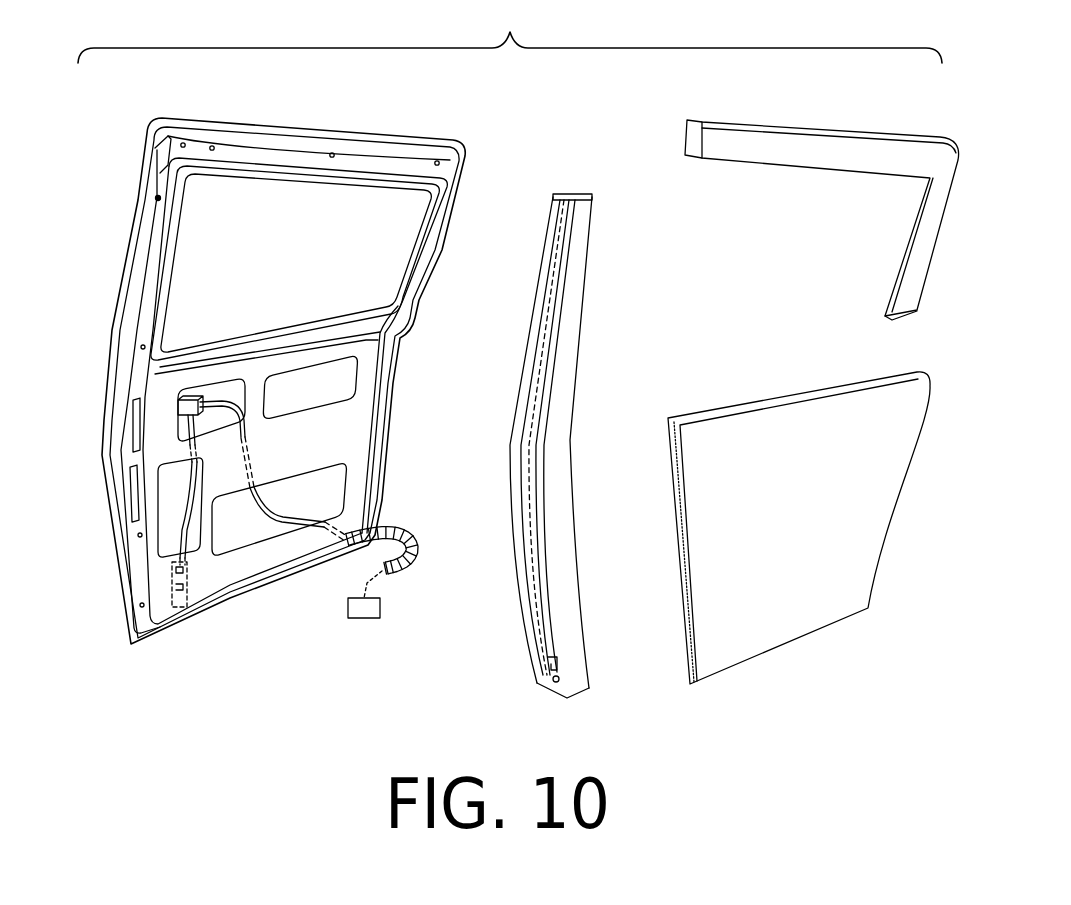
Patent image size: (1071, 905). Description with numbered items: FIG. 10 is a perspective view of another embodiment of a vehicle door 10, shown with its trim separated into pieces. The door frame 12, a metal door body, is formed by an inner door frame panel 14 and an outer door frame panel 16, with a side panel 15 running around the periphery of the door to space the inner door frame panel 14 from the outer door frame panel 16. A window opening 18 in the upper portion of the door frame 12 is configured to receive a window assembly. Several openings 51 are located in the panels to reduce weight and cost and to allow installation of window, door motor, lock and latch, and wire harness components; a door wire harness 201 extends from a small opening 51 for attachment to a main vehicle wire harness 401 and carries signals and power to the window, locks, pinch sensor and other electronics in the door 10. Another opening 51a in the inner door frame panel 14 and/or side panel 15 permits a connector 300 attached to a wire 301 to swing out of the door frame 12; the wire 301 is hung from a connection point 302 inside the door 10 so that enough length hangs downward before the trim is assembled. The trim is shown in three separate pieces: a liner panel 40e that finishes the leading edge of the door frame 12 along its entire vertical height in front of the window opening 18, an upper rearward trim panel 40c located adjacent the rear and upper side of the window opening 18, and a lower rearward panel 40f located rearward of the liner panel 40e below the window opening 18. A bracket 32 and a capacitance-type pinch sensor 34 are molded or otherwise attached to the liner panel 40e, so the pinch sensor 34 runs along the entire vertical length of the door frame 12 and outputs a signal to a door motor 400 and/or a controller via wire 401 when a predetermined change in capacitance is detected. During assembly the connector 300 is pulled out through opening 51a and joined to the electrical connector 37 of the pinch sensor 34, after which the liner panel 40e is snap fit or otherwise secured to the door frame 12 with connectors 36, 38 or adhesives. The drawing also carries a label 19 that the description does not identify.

The door 10 is at (510, 34).
The door frame 12 is at (467, 153).
The inner door frame panel 14 is at (370, 347).
The side panel 15 is at (153, 199).
The outer door frame panel 16 is at (148, 138).
The window opening 18 is at (228, 229).
The mounting point 19 is at (158, 200).
The bracket 32 is at (541, 407).
The pinch sensor 34 is at (529, 627).
The connector 36 is at (555, 200).
The electrical connector 37 is at (557, 657).
The connector 38 is at (559, 680).
The upper rearward trim panel 40c is at (848, 141).
The liner panel 40e is at (572, 358).
The lower rearward panel 40f is at (847, 582).
The openings 51 is at (223, 368).
The opening 51a is at (132, 485).
The door wire harness 201 is at (413, 531).
The connector 300 is at (188, 606).
The wire 301 is at (183, 517).
The connection point 302 is at (189, 397).
The door motor 400 is at (362, 618).
The main vehicle wire harness 401 is at (370, 582).